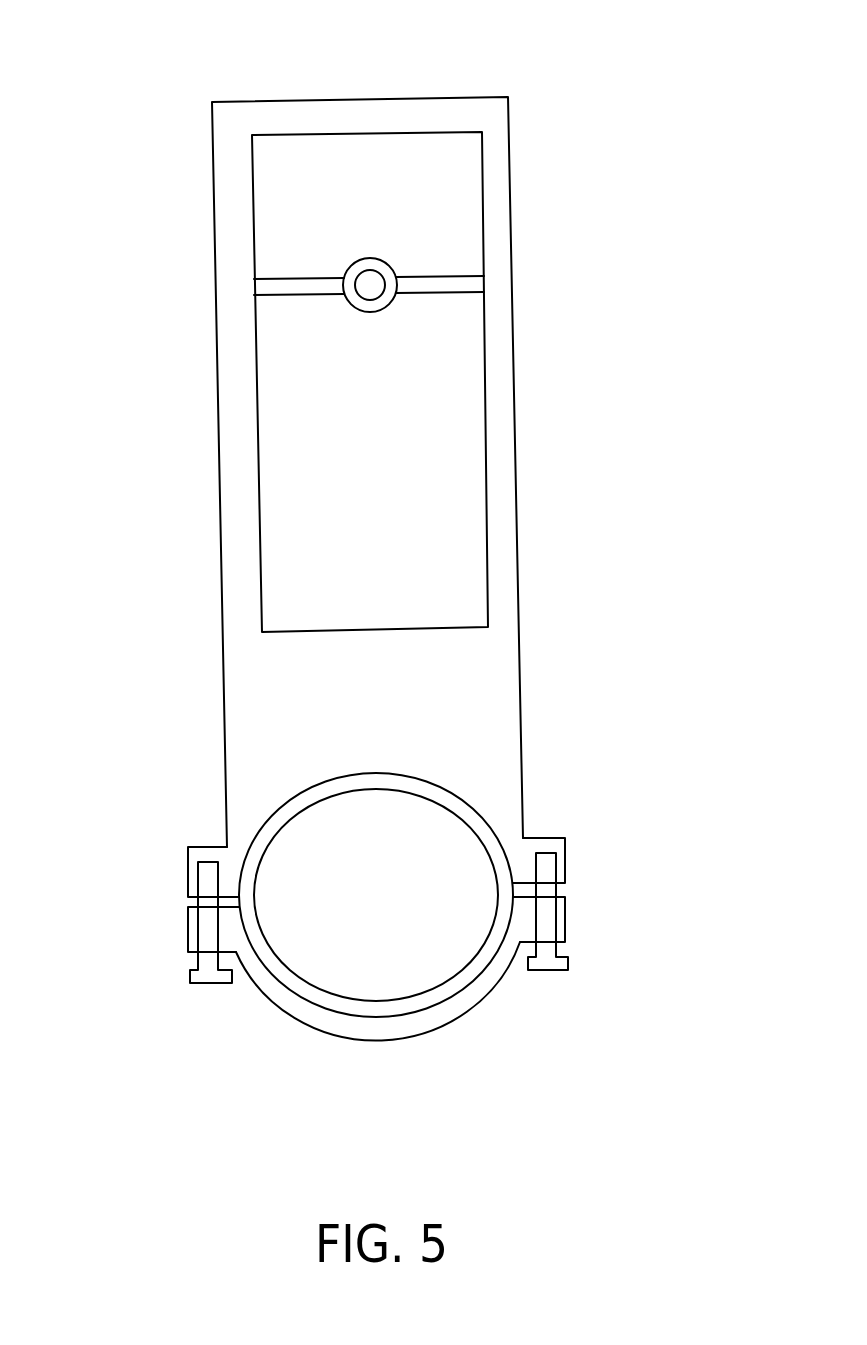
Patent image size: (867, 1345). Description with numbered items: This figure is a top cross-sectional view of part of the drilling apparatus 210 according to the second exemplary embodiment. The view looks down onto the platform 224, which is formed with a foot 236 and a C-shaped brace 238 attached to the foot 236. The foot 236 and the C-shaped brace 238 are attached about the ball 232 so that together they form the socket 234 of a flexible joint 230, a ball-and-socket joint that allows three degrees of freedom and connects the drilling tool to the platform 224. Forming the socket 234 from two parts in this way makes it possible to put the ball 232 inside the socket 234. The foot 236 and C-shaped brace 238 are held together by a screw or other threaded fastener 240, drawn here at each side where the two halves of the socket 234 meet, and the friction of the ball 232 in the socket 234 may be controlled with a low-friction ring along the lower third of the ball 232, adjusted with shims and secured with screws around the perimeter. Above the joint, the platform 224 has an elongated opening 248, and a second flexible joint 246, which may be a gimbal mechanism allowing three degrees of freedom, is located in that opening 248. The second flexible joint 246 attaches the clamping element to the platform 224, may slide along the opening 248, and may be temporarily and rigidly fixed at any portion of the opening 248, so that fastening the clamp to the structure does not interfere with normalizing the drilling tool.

The drilling apparatus 210 is at (594, 70).
The platform 224 is at (165, 952).
The flexible joint 230 is at (568, 822).
The ball 232 is at (408, 772).
The socket 234 is at (468, 802).
The foot 236 is at (508, 167).
The C-shaped brace 238 is at (380, 1043).
The threaded fastener 240 is at (213, 984).
The second flexible joint 246 is at (393, 263).
The opening 248 is at (293, 136).